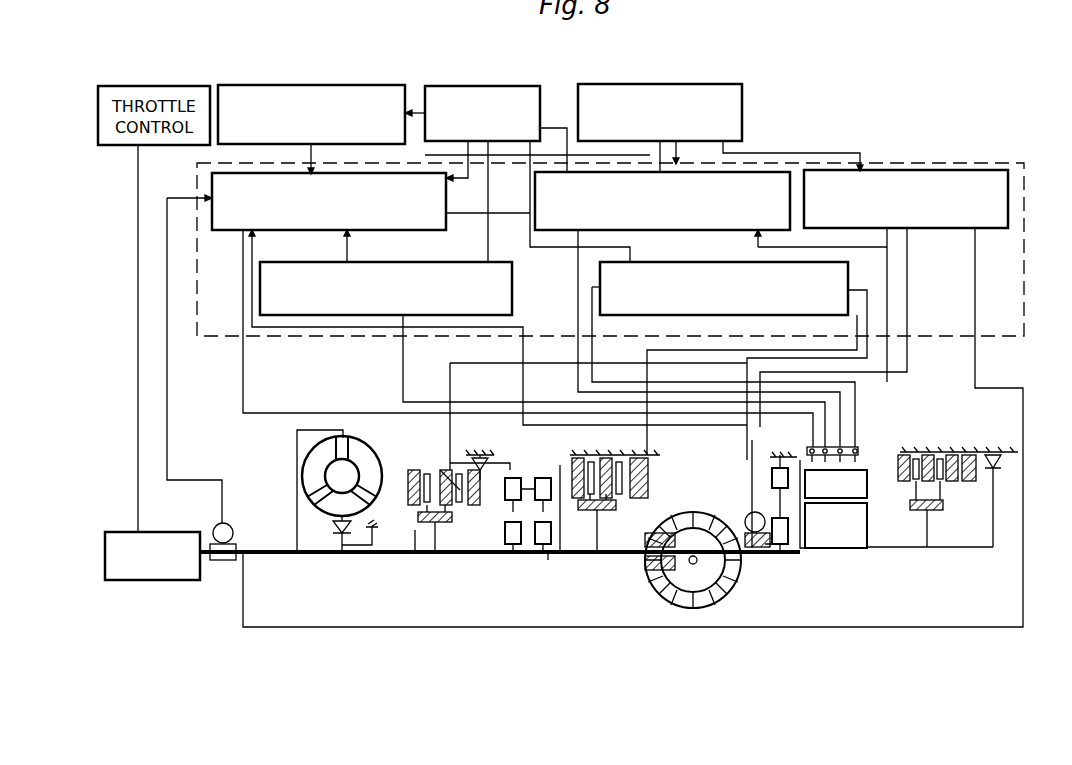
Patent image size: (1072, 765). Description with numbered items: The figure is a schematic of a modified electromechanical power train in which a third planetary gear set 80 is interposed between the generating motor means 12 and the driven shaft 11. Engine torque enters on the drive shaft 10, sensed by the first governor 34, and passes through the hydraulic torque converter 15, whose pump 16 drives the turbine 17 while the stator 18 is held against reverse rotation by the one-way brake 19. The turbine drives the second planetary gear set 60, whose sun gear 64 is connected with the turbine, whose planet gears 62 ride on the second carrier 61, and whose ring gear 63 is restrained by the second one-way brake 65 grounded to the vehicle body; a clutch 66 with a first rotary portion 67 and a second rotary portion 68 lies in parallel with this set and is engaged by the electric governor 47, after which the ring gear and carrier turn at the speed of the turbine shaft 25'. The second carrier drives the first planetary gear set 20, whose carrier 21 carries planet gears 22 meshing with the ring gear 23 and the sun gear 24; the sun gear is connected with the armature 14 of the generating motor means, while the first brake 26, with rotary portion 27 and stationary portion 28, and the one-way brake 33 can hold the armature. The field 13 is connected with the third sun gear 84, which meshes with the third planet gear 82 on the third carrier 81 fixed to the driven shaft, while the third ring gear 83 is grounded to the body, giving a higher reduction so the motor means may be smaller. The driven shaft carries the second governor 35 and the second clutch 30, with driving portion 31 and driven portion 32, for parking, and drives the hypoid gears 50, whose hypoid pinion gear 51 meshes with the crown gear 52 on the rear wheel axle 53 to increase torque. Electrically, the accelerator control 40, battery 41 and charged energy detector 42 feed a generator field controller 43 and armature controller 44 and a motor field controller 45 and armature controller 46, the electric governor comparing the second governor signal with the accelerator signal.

The drive shaft 10 is at (203, 562).
The driven shaft 11 is at (765, 565).
The generating motor means 12 is at (852, 523).
The field element 13 is at (867, 486).
The armature 14 is at (867, 527).
The hydraulic torque converter 15 is at (330, 504).
The pump 16 is at (352, 452).
The turbine 17 is at (302, 465).
The stator 18 is at (362, 504).
The one-way brake 19 is at (335, 530).
The planetary gear set 20 is at (538, 556).
The carrier 21 is at (552, 515).
The planet gears 22 is at (576, 466).
The ring gear 23 is at (522, 478).
The sun gear 24 is at (550, 556).
The turbine shaft 25' is at (447, 560).
The first brake 26 is at (631, 508).
The rotary portion 27 is at (616, 503).
The stationary portion 28 is at (610, 464).
The second clutch 30 is at (963, 492).
The driving portion 31 is at (943, 502).
The driven portion 32 is at (928, 455).
The one-way brake 33 is at (1001, 468).
The first governor 34 is at (213, 528).
The second governor 35 is at (745, 518).
The accelerator control 40 is at (653, 84).
The battery 41 is at (467, 86).
The charged energy detector 42 is at (298, 86).
The field controller 43 is at (232, 230).
The armature controller 44 is at (455, 262).
The field controller 45 is at (794, 183).
The armature controller 46 is at (697, 262).
The electric governor 47 is at (935, 228).
The hypoid gears 50 is at (691, 588).
The hypoid pinion gear 51 is at (660, 572).
The crown gear 52 is at (665, 608).
The rear wheel axle 53 is at (713, 596).
The second planetary gear set 60 is at (495, 506).
The second carrier 61 is at (505, 515).
The planet gears 62 is at (522, 468).
The ring gear 63 is at (448, 470).
The sun gear 64 is at (505, 535).
The second one-way brake 65 is at (474, 456).
The clutch 66 is at (440, 552).
The first rotary portion 67 is at (377, 526).
The second rotary portion 68 is at (432, 476).
The third planetary gear set 80 is at (791, 523).
The third carrier 81 is at (779, 548).
The third planet gear 82 is at (776, 490).
The third ring gear 83 is at (772, 472).
The third sun gear 84 is at (790, 542).